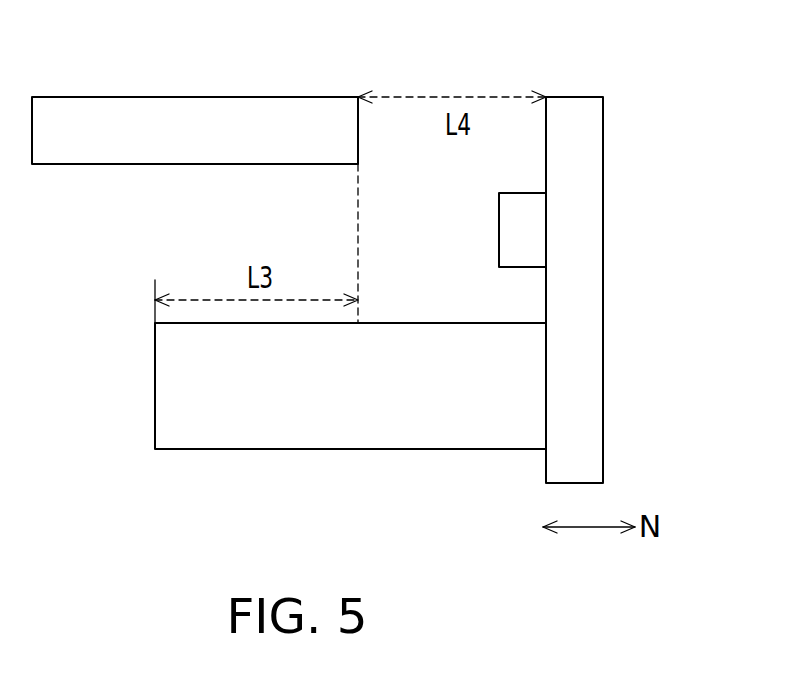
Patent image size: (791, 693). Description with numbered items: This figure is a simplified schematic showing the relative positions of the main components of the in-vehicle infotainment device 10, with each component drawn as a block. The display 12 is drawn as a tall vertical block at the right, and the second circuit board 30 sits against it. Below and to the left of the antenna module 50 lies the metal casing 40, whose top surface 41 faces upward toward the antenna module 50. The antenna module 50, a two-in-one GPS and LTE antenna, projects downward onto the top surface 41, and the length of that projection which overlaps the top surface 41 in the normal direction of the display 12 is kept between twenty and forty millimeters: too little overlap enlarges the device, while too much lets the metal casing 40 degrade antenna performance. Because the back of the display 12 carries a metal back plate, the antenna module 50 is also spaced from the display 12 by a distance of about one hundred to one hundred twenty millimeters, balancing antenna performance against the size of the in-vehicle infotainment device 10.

The in-vehicle infotainment device 10 is at (676, 592).
The display 12 is at (597, 137).
The second circuit board 30 is at (531, 230).
The metal casing 40 is at (405, 430).
The top surface 41 is at (501, 321).
The antenna module 50 is at (195, 107).